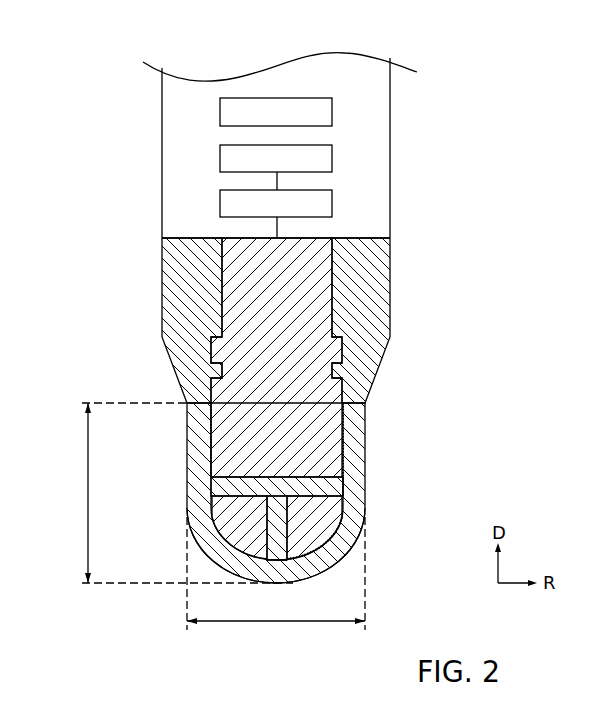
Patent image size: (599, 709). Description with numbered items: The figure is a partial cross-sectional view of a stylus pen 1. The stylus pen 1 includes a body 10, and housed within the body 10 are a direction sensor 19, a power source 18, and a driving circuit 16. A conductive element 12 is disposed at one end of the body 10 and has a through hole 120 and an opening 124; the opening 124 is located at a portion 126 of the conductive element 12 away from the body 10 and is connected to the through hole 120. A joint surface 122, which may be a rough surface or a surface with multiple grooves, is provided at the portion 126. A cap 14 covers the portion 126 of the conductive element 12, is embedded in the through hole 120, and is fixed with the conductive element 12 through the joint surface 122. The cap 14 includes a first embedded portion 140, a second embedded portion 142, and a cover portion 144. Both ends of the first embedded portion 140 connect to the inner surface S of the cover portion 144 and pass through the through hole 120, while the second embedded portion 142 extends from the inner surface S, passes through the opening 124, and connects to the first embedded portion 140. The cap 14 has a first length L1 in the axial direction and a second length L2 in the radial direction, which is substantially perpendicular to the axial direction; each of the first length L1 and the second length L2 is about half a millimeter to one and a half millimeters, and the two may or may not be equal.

The stylus pen 1 is at (71, 61).
The body 10 is at (377, 225).
The conductive element 12 is at (315, 277).
The cap 14 is at (355, 423).
The driving circuit 16 is at (333, 202).
The power source 18 is at (333, 157).
The direction sensor 19 is at (333, 110).
The inner surface S is at (212, 433).
The through hole 120 is at (348, 487).
The joint surface 122 is at (340, 537).
The opening 124 is at (280, 568).
The portion 126 is at (350, 566).
The first embedded portion 140 is at (217, 489).
The second embedded portion 142 is at (273, 534).
The cover portion 144 is at (240, 570).
The first length L1 is at (175, 493).
The second length L2 is at (276, 583).